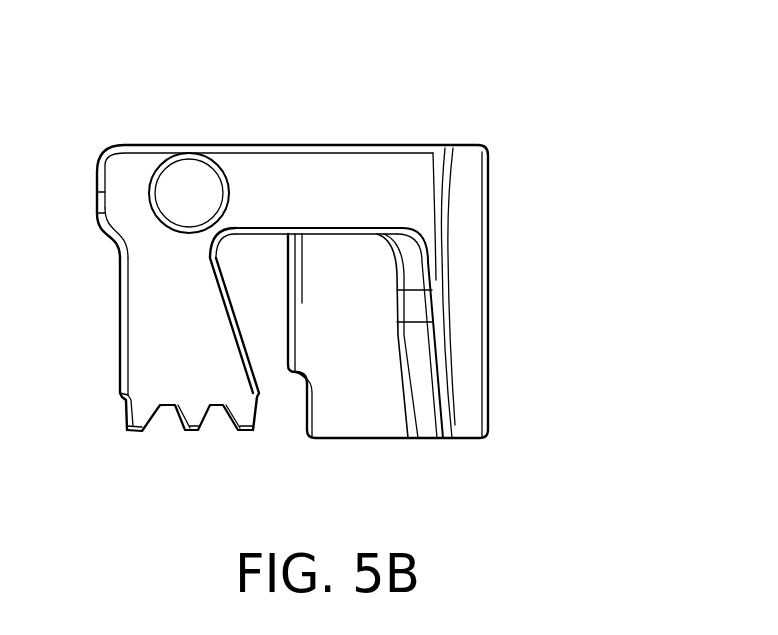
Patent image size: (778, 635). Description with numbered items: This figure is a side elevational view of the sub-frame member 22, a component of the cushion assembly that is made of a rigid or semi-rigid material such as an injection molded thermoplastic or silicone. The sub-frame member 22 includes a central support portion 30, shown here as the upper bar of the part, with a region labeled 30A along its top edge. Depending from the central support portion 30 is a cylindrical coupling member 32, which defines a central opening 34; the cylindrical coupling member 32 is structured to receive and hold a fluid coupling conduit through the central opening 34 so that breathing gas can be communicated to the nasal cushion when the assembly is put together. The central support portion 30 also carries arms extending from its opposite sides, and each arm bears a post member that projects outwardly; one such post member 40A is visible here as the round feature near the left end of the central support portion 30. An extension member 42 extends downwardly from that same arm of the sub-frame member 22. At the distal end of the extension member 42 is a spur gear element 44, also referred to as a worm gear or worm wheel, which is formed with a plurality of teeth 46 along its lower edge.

The sub-frame member 22 is at (595, 113).
The central support portion 30 is at (441, 153).
The upper bar portion 30A is at (342, 173).
The cylindrical coupling member 32 is at (363, 420).
The central opening 34 is at (490, 317).
The post member 40A is at (190, 183).
The extension member 42 is at (147, 328).
The spur gear element 44 is at (122, 412).
The teeth 46 is at (250, 440).